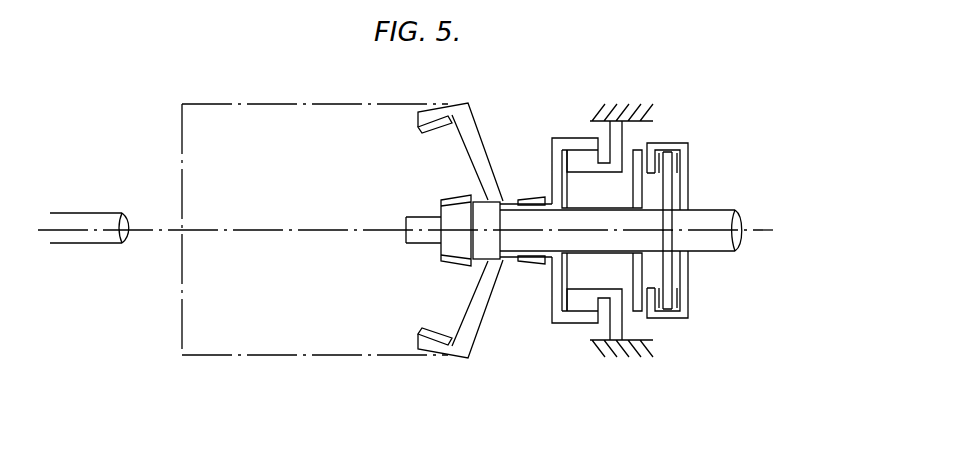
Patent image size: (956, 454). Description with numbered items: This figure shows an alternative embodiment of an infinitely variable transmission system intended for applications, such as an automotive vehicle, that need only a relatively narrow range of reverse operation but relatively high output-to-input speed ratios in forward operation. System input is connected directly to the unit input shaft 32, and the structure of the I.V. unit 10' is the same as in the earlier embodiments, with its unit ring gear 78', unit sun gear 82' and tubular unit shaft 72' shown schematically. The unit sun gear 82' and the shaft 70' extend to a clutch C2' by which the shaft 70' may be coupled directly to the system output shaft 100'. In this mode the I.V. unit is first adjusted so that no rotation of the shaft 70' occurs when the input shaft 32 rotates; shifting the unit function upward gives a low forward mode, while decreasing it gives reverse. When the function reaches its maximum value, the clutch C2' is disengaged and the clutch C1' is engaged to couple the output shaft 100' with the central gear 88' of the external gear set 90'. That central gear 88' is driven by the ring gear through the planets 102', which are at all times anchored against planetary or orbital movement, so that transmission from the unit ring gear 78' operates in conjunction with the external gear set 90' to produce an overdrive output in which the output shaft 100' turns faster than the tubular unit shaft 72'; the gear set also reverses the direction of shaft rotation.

The infinitely variable unit 10' is at (315, 214).
The unit input shaft 32 is at (106, 212).
The unit ring gear 78' is at (429, 230).
The unit sun gear 82' is at (434, 216).
The shaft 70' is at (547, 230).
The tubular unit shaft 72' is at (526, 209).
The external gear set 90' is at (576, 145).
The planets 102' is at (583, 309).
The central gear 88' is at (602, 230).
The clutch C1' is at (672, 169).
The clutch C2' is at (693, 285).
The system output shaft 100' is at (727, 214).